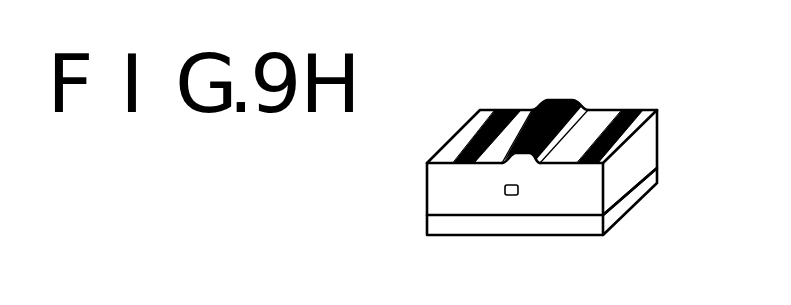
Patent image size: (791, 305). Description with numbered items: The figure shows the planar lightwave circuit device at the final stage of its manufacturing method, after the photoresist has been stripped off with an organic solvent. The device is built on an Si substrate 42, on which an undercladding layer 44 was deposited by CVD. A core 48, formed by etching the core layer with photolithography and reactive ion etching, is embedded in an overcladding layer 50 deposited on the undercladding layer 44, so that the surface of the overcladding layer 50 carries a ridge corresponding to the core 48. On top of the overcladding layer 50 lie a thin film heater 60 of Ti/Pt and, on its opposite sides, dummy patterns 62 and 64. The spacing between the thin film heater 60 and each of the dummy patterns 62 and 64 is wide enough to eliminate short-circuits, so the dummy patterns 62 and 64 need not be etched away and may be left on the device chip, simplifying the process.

The Si substrate 42 is at (658, 177).
The undercladding layer 44 is at (658, 152).
The overcladding layer 50 is at (658, 125).
The core 48 is at (508, 196).
The thin film heater 60 is at (568, 99).
The dummy pattern 62 is at (510, 108).
The dummy pattern 64 is at (635, 108).